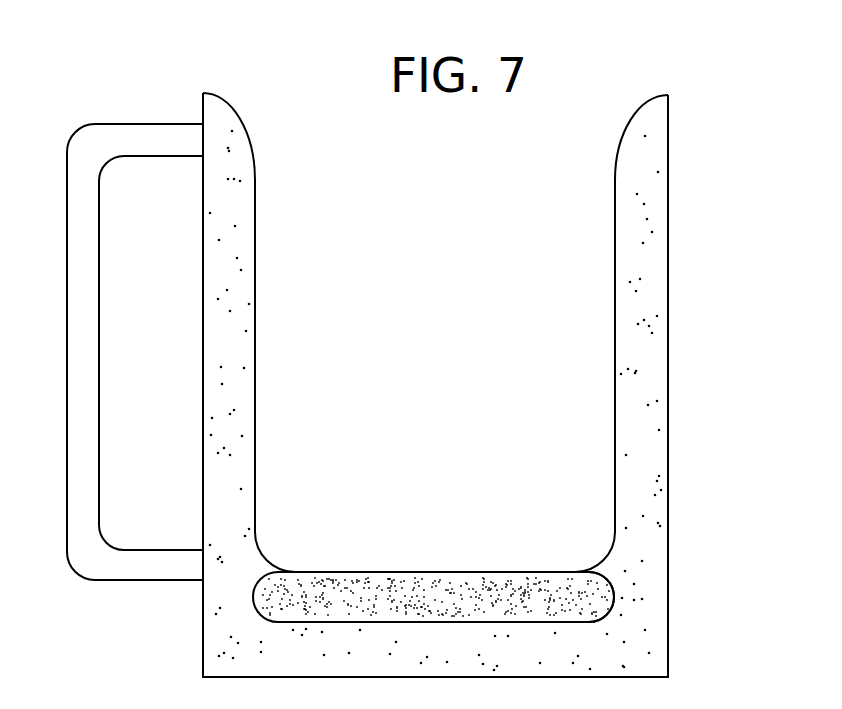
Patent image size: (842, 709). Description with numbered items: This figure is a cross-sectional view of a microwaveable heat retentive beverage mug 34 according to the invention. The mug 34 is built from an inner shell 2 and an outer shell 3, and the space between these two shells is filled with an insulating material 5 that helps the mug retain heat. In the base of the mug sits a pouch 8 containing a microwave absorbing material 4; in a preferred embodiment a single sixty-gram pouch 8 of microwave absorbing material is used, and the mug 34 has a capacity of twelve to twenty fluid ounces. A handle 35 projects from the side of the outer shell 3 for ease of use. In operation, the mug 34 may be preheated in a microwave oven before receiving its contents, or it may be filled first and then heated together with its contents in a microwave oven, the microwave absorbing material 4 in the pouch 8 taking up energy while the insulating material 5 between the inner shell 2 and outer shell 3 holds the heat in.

The beverage mug 34 is at (505, 371).
The outer shell 3 is at (669, 282).
The inner shell 2 is at (613, 303).
The insulating material 5 is at (655, 428).
The microwave absorbing material 4 is at (552, 587).
The pouch 8 is at (613, 597).
The handle 35 is at (92, 562).